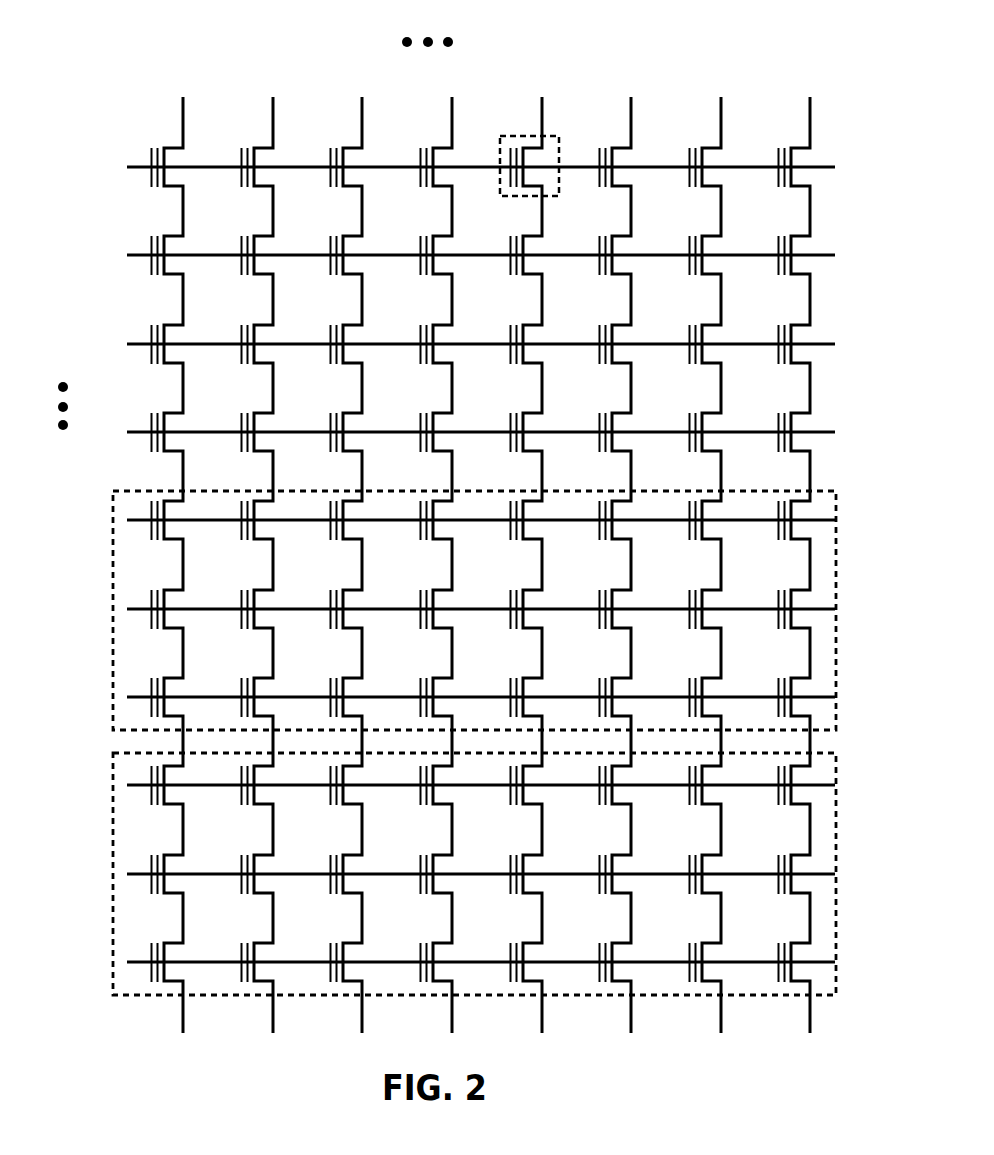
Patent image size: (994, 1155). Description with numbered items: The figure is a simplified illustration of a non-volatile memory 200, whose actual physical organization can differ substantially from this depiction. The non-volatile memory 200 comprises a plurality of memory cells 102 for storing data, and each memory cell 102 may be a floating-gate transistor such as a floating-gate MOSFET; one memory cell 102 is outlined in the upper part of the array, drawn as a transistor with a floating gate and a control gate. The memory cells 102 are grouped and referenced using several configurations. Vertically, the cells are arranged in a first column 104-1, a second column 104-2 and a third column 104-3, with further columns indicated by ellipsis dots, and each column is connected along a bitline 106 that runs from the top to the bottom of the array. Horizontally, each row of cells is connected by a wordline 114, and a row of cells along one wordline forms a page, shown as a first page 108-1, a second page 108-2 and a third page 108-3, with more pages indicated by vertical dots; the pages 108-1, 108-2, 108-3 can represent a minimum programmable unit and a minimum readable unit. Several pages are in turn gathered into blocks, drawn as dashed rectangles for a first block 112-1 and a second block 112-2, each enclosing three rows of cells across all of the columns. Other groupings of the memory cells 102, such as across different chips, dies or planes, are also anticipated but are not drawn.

The memory cell 102 is at (615, 68).
The column 104-1 is at (205, 77).
The column 104-2 is at (295, 77).
The column 104-3 is at (385, 77).
The bitline 106 is at (787, 68).
The page 108-1 is at (110, 198).
The page 108-2 is at (110, 286).
The page 108-3 is at (110, 373).
The block 112-1 is at (113, 642).
The block 112-2 is at (113, 905).
The wordline 114 is at (142, 963).
The non-volatile memory 200 is at (781, 1053).